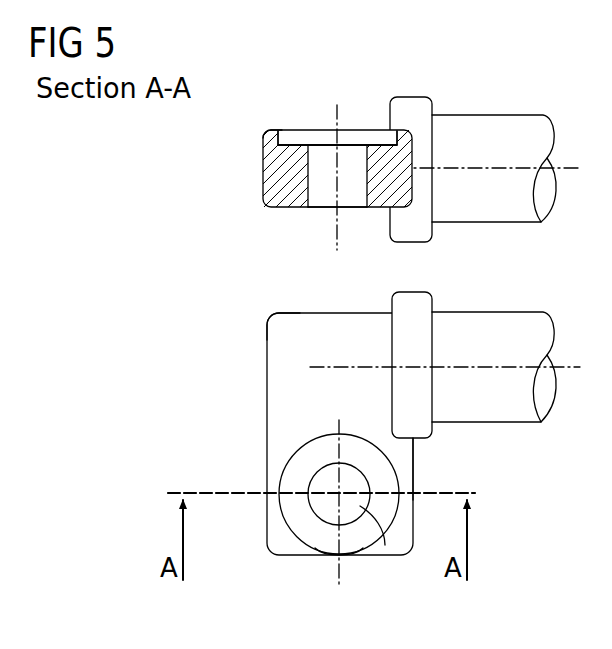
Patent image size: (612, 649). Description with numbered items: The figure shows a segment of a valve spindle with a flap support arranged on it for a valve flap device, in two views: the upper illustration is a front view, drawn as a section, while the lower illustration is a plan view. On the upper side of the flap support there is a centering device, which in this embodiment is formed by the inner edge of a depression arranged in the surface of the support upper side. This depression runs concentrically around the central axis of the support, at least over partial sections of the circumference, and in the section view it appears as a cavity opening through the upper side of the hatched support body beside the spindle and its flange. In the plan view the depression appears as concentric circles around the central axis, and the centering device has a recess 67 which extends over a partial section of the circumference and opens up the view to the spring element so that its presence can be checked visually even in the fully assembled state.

The recess 67 is at (350, 545).